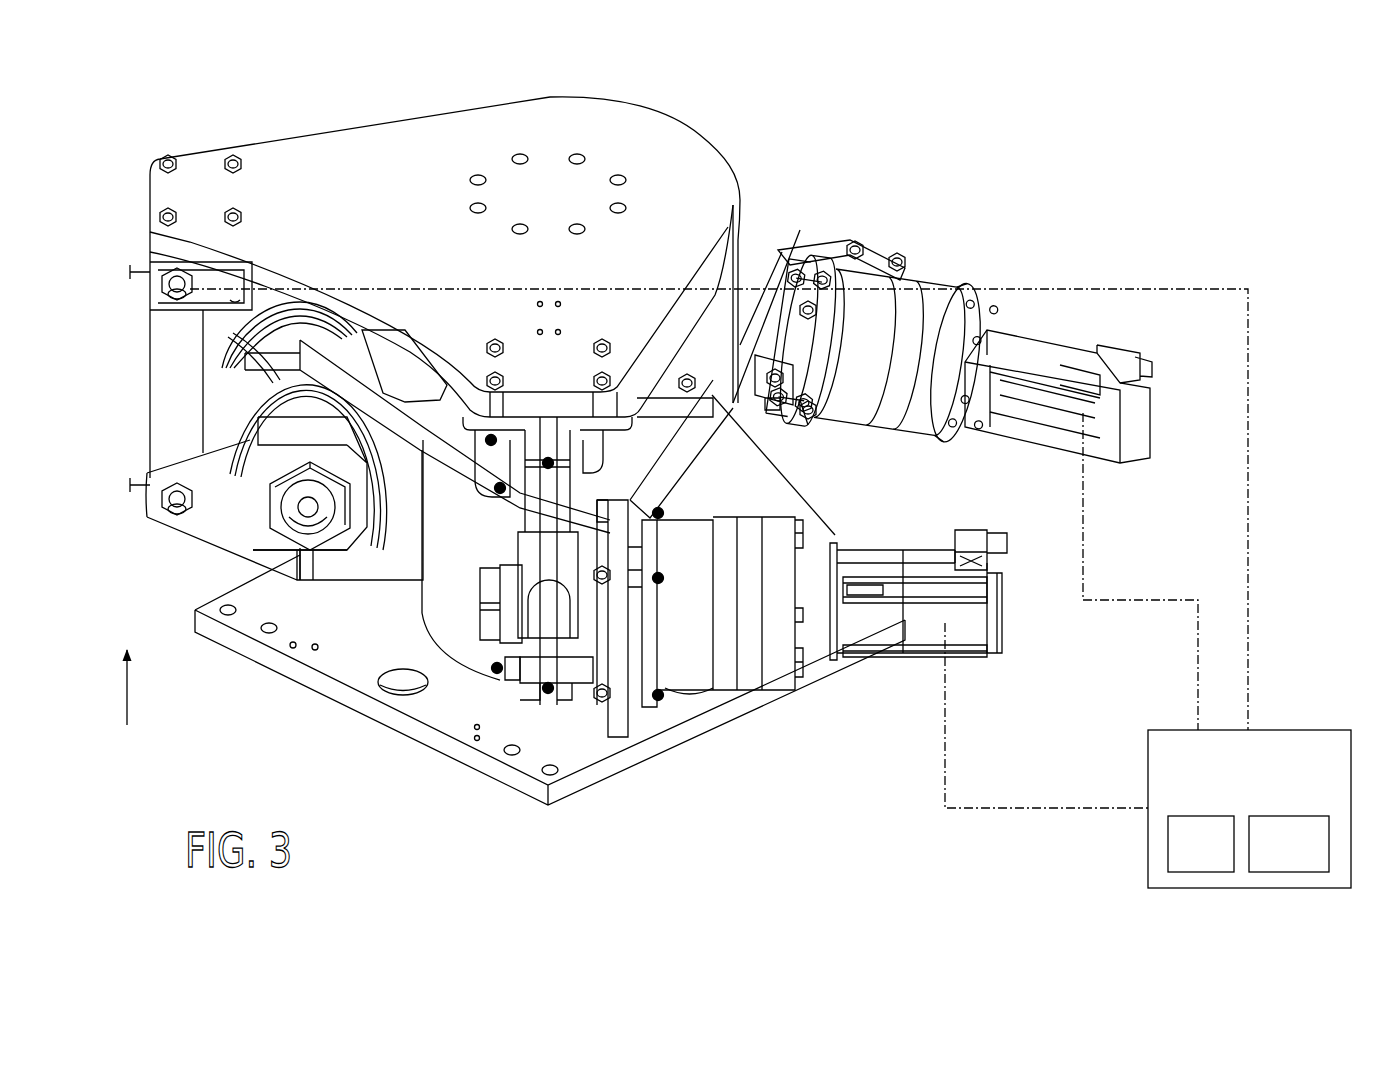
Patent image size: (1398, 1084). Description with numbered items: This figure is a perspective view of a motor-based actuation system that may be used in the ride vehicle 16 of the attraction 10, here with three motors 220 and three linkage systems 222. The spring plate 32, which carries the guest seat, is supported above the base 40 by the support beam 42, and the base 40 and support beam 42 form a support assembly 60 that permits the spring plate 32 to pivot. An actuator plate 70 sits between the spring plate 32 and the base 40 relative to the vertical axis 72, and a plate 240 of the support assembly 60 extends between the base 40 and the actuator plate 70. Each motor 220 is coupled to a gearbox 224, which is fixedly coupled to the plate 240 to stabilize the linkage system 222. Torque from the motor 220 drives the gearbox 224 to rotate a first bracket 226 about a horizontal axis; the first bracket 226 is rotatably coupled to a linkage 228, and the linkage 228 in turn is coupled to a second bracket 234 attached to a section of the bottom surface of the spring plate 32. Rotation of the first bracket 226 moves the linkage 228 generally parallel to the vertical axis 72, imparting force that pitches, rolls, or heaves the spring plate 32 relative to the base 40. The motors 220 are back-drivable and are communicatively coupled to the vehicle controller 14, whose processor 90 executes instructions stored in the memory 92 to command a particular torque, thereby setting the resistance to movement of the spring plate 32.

The attraction 10 is at (1026, 92).
The ride vehicle 16 is at (1010, 136).
The spring plate 32 is at (428, 128).
The vehicle controller 14 is at (1185, 729).
The processor 90 is at (1203, 873).
The memory 92 is at (1330, 843).
The vertical axis 72 is at (126, 690).
The actuator plate 70 is at (303, 440).
The base 40 is at (353, 703).
The support beam 42 is at (438, 617).
The support assembly 60 is at (550, 627).
The plate 240 is at (390, 570).
The motor 220 is at (268, 290).
The linkage system 222 is at (745, 268).
The gearbox 224 is at (963, 275).
The first bracket 226 is at (215, 517).
The linkage 228 is at (742, 280).
The second bracket 234 is at (155, 292).